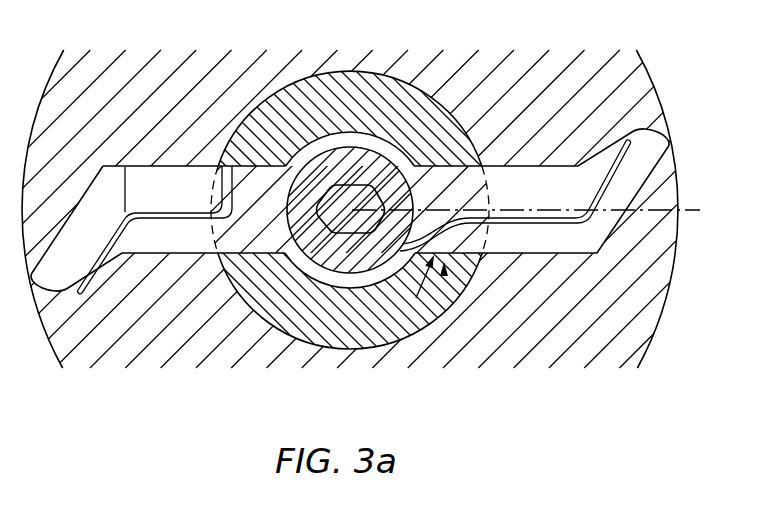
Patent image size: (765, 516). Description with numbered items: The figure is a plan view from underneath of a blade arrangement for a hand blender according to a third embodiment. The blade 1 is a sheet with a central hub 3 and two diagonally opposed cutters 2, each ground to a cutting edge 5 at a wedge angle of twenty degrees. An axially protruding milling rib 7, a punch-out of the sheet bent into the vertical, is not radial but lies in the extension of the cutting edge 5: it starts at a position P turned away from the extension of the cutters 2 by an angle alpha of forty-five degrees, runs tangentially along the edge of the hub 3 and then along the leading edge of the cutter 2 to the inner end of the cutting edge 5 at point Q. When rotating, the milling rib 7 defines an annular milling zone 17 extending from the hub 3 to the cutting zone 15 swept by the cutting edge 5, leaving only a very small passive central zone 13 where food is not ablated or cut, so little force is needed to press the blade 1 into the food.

The blade 1 is at (168, 142).
The cutter 2 is at (560, 177).
The hub 3 is at (398, 155).
The cutting edge 5 is at (603, 249).
The milling rib 7 is at (445, 214).
The passive central zone 13 is at (337, 162).
The cutting zone 15 is at (593, 314).
The annular milling zone 17 is at (272, 302).